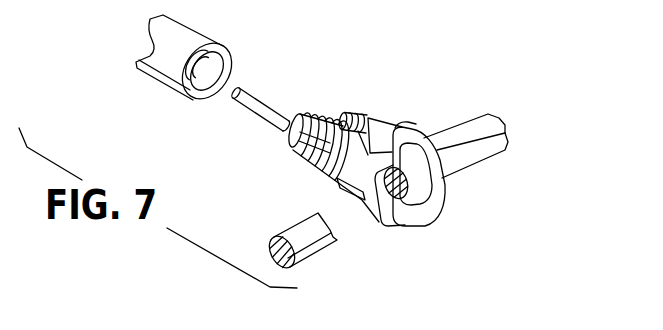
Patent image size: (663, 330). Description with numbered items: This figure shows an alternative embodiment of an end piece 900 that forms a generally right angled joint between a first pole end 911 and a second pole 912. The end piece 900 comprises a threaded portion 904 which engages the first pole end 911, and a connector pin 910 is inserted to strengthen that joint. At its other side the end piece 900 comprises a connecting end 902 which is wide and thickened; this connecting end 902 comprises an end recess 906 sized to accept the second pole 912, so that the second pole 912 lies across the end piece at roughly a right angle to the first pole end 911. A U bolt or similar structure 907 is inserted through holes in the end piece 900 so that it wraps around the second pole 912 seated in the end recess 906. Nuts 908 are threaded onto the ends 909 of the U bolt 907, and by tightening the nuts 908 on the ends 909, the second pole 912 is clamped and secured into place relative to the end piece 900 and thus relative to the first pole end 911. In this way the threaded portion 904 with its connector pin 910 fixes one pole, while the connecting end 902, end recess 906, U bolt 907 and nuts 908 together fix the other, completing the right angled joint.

The end piece 900 is at (422, 171).
The connecting end 902 is at (491, 125).
The threaded portion 904 is at (316, 120).
The end recess 906 is at (383, 227).
The U bolt 907 is at (440, 201).
The nuts 908 is at (381, 112).
The ends of the U bolt 909 is at (357, 109).
The connector pin 910 is at (258, 93).
The first pole end 911 is at (200, 33).
The second pole 912 is at (493, 150).